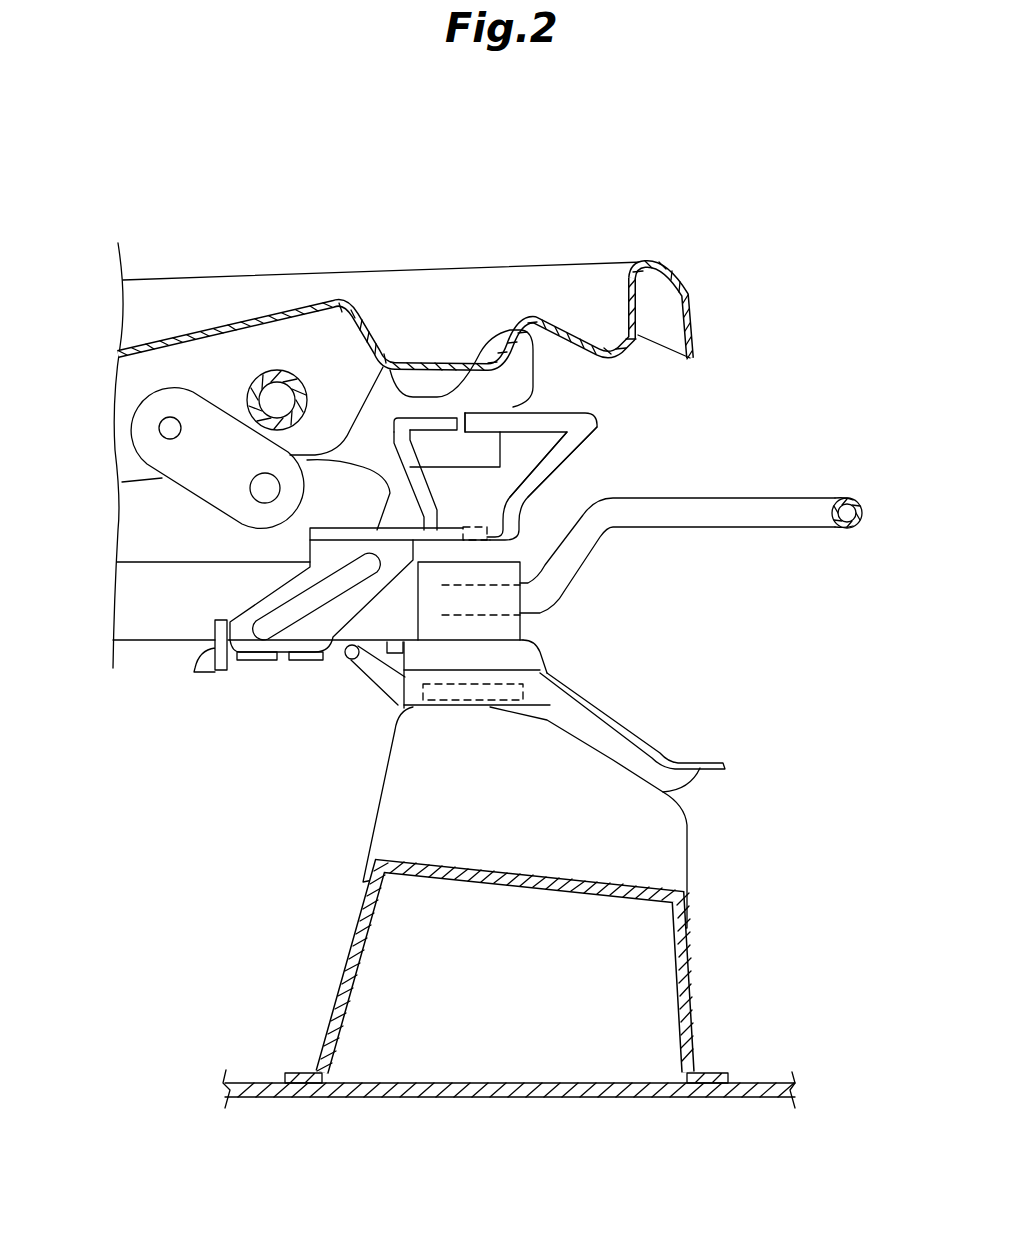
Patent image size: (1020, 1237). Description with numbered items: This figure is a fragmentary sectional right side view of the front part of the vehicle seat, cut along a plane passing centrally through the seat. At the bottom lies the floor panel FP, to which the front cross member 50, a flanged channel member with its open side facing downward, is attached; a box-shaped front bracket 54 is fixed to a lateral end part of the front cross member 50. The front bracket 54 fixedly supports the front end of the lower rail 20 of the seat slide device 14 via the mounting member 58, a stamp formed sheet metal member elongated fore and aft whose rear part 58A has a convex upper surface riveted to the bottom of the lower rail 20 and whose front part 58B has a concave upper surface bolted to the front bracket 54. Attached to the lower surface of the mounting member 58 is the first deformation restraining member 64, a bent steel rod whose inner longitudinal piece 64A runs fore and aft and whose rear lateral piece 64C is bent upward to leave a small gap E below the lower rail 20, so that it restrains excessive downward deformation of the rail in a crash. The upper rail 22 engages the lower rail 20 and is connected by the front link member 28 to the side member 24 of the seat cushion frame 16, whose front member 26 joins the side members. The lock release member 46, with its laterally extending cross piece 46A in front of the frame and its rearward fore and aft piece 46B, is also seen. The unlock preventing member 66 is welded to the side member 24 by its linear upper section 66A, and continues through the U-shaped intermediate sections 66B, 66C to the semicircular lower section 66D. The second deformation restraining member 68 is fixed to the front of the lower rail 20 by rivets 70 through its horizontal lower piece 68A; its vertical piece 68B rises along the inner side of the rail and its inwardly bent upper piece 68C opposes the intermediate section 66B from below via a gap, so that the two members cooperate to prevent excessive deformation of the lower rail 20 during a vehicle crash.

The seat slide device 14 is at (133, 645).
The seat cushion frame 16 is at (507, 260).
The lower rail 20 is at (168, 623).
The upper rail 22 is at (147, 531).
The side member 24 is at (522, 362).
The front member 26 is at (680, 272).
The front link member 28 is at (150, 403).
The lock release member 46 is at (782, 502).
The cross piece 46A is at (850, 530).
The fore and aft piece 46B is at (487, 593).
The front cross member 50 is at (683, 997).
The front bracket 54 is at (673, 860).
The mounting member 58 is at (605, 705).
The rear part 58A is at (530, 657).
The front part 58B is at (670, 778).
The first deformation restraining member 64 is at (383, 685).
The inner longitudinal piece 64A is at (473, 710).
The lateral piece 64C is at (343, 663).
The unlock preventing member 66 is at (552, 414).
The upper section 66A is at (478, 420).
The intermediate section 66B is at (557, 455).
The intermediate section 66C is at (400, 447).
The lower section 66D is at (475, 527).
The second deformation restraining member 68 is at (313, 556).
The lower piece 68A is at (233, 645).
The vertical piece 68B is at (260, 615).
The upper piece 68C is at (353, 530).
The rivets 70 is at (250, 660).
The small gap E is at (368, 642).
The floor panel FP is at (773, 1083).